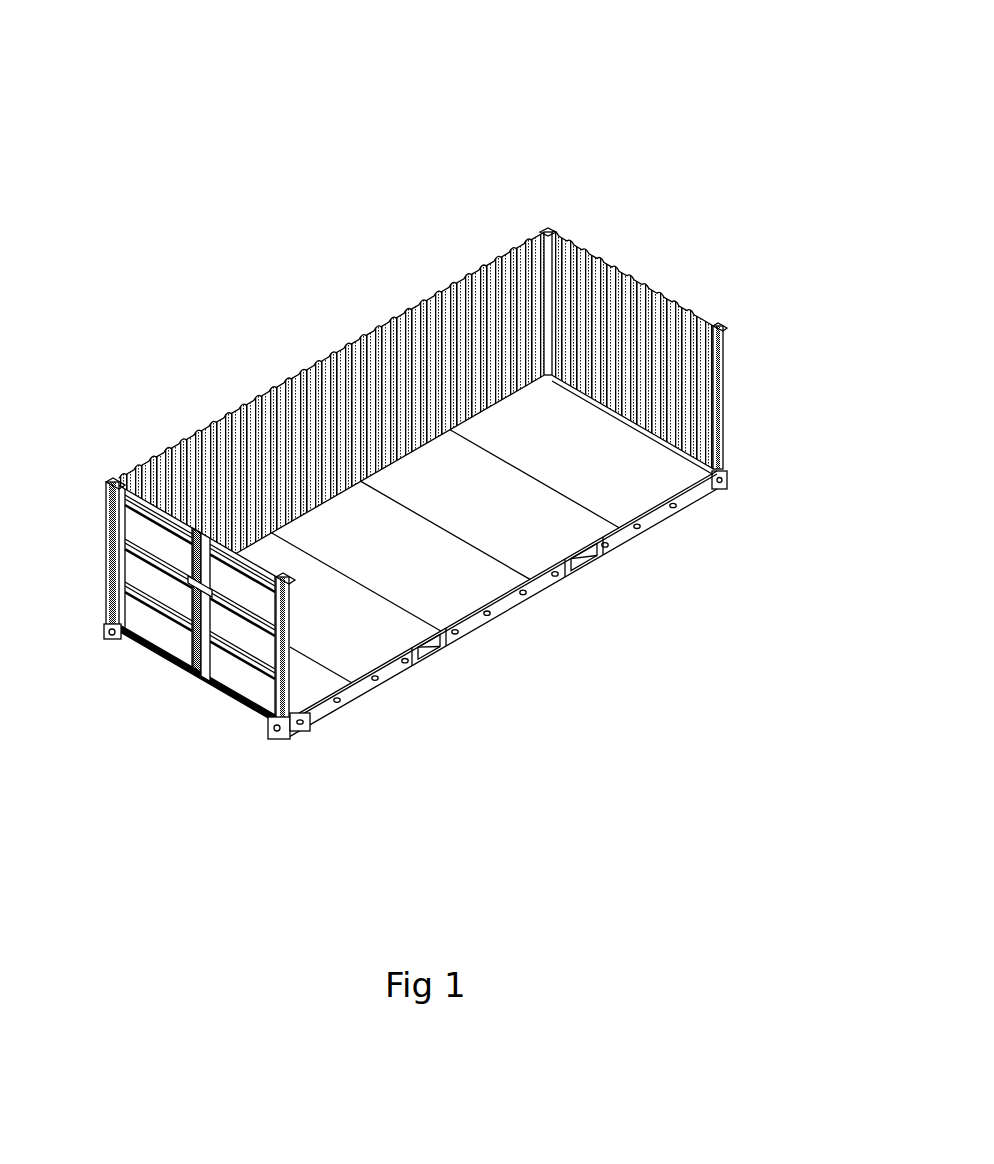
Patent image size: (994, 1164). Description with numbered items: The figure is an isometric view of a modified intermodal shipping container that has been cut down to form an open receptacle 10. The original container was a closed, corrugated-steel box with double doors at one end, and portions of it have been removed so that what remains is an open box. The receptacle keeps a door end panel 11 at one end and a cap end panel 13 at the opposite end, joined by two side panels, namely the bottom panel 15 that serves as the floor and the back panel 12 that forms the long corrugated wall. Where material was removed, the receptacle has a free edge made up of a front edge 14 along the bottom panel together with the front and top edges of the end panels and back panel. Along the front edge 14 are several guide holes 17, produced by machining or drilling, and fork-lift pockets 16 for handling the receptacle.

The open receptacle 10 is at (433, 380).
The door end panel 11 is at (152, 622).
The back panel 12 is at (360, 335).
The cap end panel 13 is at (618, 270).
The front edge 14 is at (657, 517).
The bottom panel 15 is at (555, 522).
The fork-lift pockets 16 is at (583, 568).
The guide holes 17 is at (378, 680).